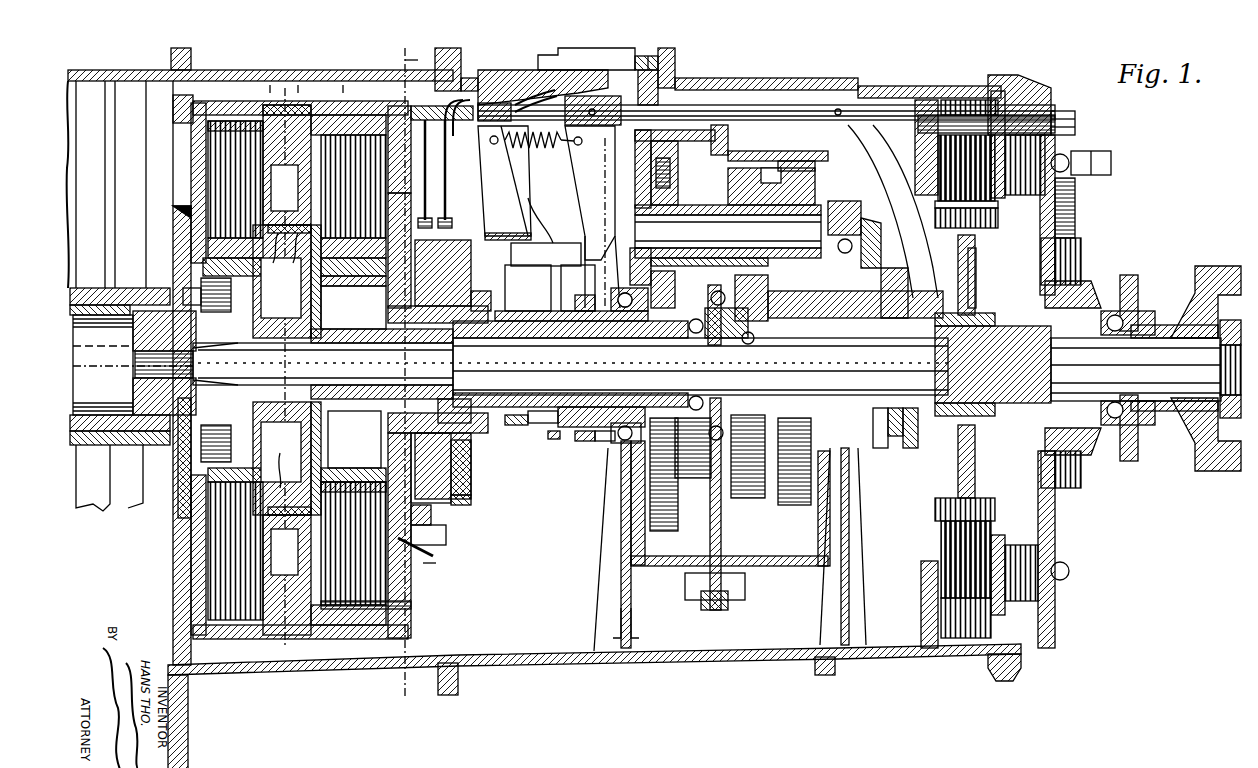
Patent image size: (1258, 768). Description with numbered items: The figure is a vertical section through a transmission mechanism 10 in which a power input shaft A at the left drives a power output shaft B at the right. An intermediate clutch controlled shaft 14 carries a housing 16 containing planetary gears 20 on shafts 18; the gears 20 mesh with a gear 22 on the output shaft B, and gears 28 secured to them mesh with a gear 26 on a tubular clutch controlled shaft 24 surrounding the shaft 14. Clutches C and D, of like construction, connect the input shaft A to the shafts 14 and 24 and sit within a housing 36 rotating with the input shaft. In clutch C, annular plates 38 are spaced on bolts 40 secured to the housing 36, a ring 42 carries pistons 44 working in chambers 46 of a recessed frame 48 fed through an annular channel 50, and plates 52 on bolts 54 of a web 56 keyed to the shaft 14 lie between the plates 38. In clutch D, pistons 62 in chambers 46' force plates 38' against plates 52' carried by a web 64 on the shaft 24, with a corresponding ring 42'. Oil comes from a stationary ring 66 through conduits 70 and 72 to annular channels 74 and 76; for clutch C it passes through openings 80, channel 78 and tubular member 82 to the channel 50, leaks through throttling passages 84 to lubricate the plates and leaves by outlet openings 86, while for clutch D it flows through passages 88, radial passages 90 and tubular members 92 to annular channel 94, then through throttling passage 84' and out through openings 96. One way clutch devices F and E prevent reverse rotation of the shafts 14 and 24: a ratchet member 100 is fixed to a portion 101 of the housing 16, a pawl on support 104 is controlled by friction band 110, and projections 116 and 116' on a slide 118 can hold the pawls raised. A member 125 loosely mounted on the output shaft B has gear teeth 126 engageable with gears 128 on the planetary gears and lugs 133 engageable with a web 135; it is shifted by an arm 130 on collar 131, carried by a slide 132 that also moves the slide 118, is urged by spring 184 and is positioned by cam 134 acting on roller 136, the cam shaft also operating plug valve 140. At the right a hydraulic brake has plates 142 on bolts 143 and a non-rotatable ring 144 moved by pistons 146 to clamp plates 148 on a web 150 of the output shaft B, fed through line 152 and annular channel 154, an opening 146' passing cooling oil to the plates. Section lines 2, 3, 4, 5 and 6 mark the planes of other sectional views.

The transmission housing 10 is at (600, 43).
The intermediate clutch controlled shaft 14 is at (560, 210).
The housing 16 is at (713, 533).
The shafts 18 is at (850, 208).
The gears 20 is at (760, 168).
The gear 22 is at (755, 295).
The tubular clutch controlled shaft 24 is at (547, 415).
The gear 26 is at (693, 448).
The gear 28 is at (672, 162).
The housing 36 is at (403, 560).
The annular plates 38 is at (235, 142).
The plates 38' is at (397, 348).
The bolts 40 is at (205, 139).
The ring 42 is at (217, 214).
The pressure plate 42' is at (397, 220).
The pistons 44 is at (300, 250).
The chambers 46 is at (291, 248).
The chambers 46' is at (292, 462).
The recessed ring-shaped frame 48 is at (270, 250).
The annular channel 50 is at (295, 100).
The plates 52 is at (217, 295).
The plates 52' is at (291, 440).
The bolts 54 is at (205, 236).
The web or spider 56 is at (262, 298).
The pistons 62 is at (306, 495).
The web 64 is at (320, 278).
The stationary ring 66 is at (430, 500).
The conduit 70 is at (440, 200).
The conduit 72 is at (422, 165).
The annular channel 74 is at (465, 452).
The annular channel 76 is at (463, 485).
The channel 78 is at (440, 215).
The openings 80 is at (345, 285).
The tubular member 82 is at (412, 98).
The passages 84 is at (320, 649).
The throttling passage 84' is at (348, 111).
The outlet openings 86 is at (172, 210).
The passages 88 is at (400, 528).
The passages 90 is at (440, 530).
The tubular members 92 is at (385, 590).
The annular channel 94 is at (280, 97).
The outlet openings 96 is at (425, 510).
The ratchet member 100 is at (577, 433).
The portion of housing 101 is at (557, 420).
The support 104 is at (525, 190).
The band 110 is at (610, 430).
The projection 116 is at (574, 193).
The second projection 116' is at (608, 266).
The slide 118 is at (529, 196).
The member 125 is at (895, 428).
The gear teeth 126 is at (878, 290).
The gears 128 is at (810, 160).
The arm 130 is at (872, 150).
The collar 131 is at (967, 285).
The slide 132 is at (783, 97).
The lugs 133 is at (905, 445).
The rotatable cam 134 is at (652, 50).
The web 135 is at (870, 440).
The roller 136 is at (652, 62).
The plug valve 140 is at (530, 47).
The plates 142 is at (950, 92).
The bolts 143 is at (1010, 105).
The ring 144 is at (1015, 190).
The pistons 146 is at (1077, 151).
The opening 146' is at (1074, 590).
The plates 148 is at (968, 250).
The web 150 is at (985, 300).
The line 152 is at (1083, 168).
The annular channel 154 is at (1067, 195).
The spring 184 is at (536, 147).
The section line 2 is at (262, 78).
The section line 3 is at (278, 78).
The section line 4 is at (320, 78).
The section line 5 is at (385, 45).
The section line 6 is at (410, 44).
The power input shaft A is at (131, 296).
The power output shaft B is at (1005, 395).
The clutch C is at (232, 630).
The clutch D is at (355, 630).
The one way clutch device E is at (528, 375).
The one way clutch device F is at (603, 463).